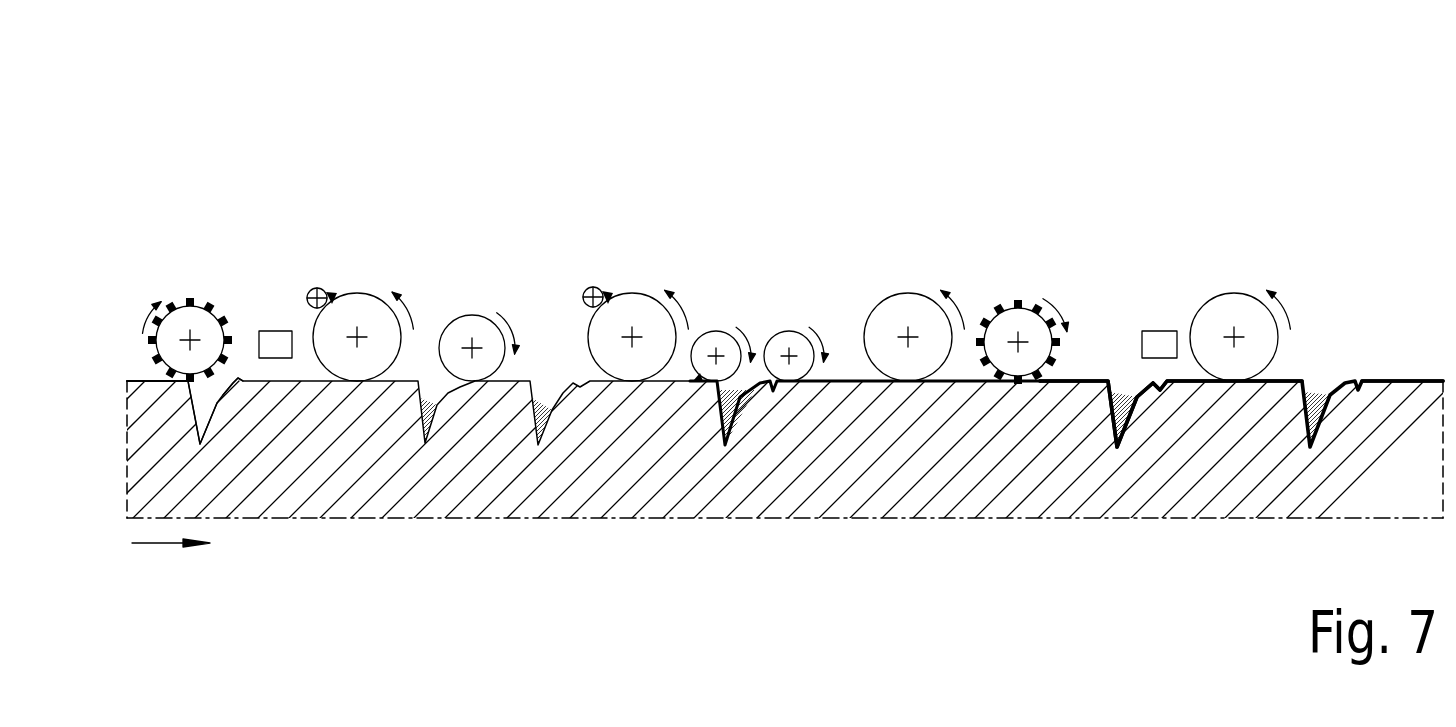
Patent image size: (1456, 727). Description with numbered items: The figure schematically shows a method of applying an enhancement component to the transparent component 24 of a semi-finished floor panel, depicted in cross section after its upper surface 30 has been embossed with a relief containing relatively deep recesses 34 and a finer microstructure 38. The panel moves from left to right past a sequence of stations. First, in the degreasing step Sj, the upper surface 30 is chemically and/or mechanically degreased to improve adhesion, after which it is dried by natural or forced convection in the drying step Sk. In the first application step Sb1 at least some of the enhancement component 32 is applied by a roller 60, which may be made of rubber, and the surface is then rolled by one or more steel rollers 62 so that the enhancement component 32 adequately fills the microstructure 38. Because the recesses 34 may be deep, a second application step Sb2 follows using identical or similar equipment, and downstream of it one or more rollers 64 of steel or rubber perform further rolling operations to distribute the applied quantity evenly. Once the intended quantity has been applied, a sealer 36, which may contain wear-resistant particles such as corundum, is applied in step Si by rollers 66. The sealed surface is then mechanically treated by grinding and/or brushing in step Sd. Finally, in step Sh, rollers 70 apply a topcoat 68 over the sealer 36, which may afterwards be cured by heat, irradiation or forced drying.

The transparent component 24 is at (497, 497).
The upper surface 30 is at (134, 381).
The enhancement component 32 is at (336, 297).
The recesses 34 is at (202, 407).
The sealer 36 is at (1095, 380).
The microstructure 38 is at (248, 383).
The roller 60 is at (363, 308).
The steel rollers 62 is at (473, 310).
The rollers 64 is at (720, 333).
The rollers 66 is at (917, 303).
The topcoat 68 is at (1405, 375).
The rollers 70 is at (1228, 302).
The degreasing step Sj is at (178, 278).
The drying step Sk is at (271, 320).
The first application step Sb1 is at (388, 278).
The second application step Sb2 is at (645, 280).
The sealer application step Si is at (894, 278).
The mechanical treatment step Sd is at (1003, 290).
The topcoat application step Sh is at (1251, 280).